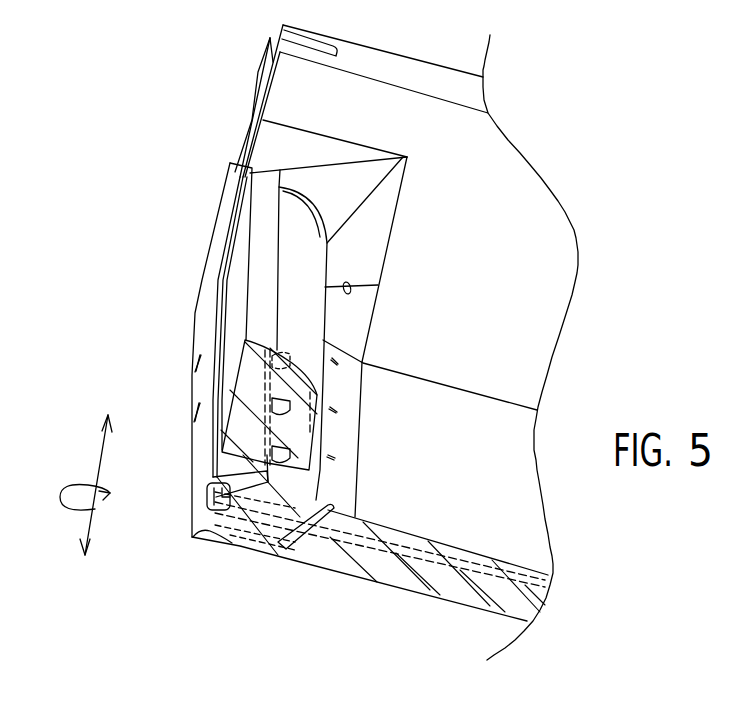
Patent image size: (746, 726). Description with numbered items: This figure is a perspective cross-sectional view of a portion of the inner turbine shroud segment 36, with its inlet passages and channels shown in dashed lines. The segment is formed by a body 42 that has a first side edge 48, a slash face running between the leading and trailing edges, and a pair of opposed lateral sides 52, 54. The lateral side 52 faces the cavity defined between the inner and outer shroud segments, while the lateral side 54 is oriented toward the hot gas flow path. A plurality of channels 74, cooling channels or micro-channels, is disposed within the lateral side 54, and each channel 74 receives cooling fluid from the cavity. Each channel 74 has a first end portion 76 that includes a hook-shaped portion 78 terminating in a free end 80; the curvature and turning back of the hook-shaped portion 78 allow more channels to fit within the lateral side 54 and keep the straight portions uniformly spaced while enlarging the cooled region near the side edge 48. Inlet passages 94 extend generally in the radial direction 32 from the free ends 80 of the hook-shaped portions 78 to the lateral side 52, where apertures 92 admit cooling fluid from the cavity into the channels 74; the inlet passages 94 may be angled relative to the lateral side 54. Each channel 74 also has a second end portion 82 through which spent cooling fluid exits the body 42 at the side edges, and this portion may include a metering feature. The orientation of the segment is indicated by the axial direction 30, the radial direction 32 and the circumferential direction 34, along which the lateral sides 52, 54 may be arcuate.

The axial direction 30 is at (88, 523).
The radial direction 32 is at (97, 455).
The circumferential direction 34 is at (67, 510).
The inner turbine shroud segment 36 is at (235, 335).
The body 42 is at (233, 345).
The first side edge 48 is at (202, 442).
The lateral side 52 is at (500, 533).
The lateral side 54 is at (402, 587).
The channel 74 is at (352, 537).
The first end portion 76 is at (226, 535).
The hook-shaped portion 78 is at (200, 486).
The free end 80 is at (260, 535).
The second end portion 82 is at (200, 540).
The apertures 92 is at (338, 410).
The inlet passages 94 is at (290, 547).